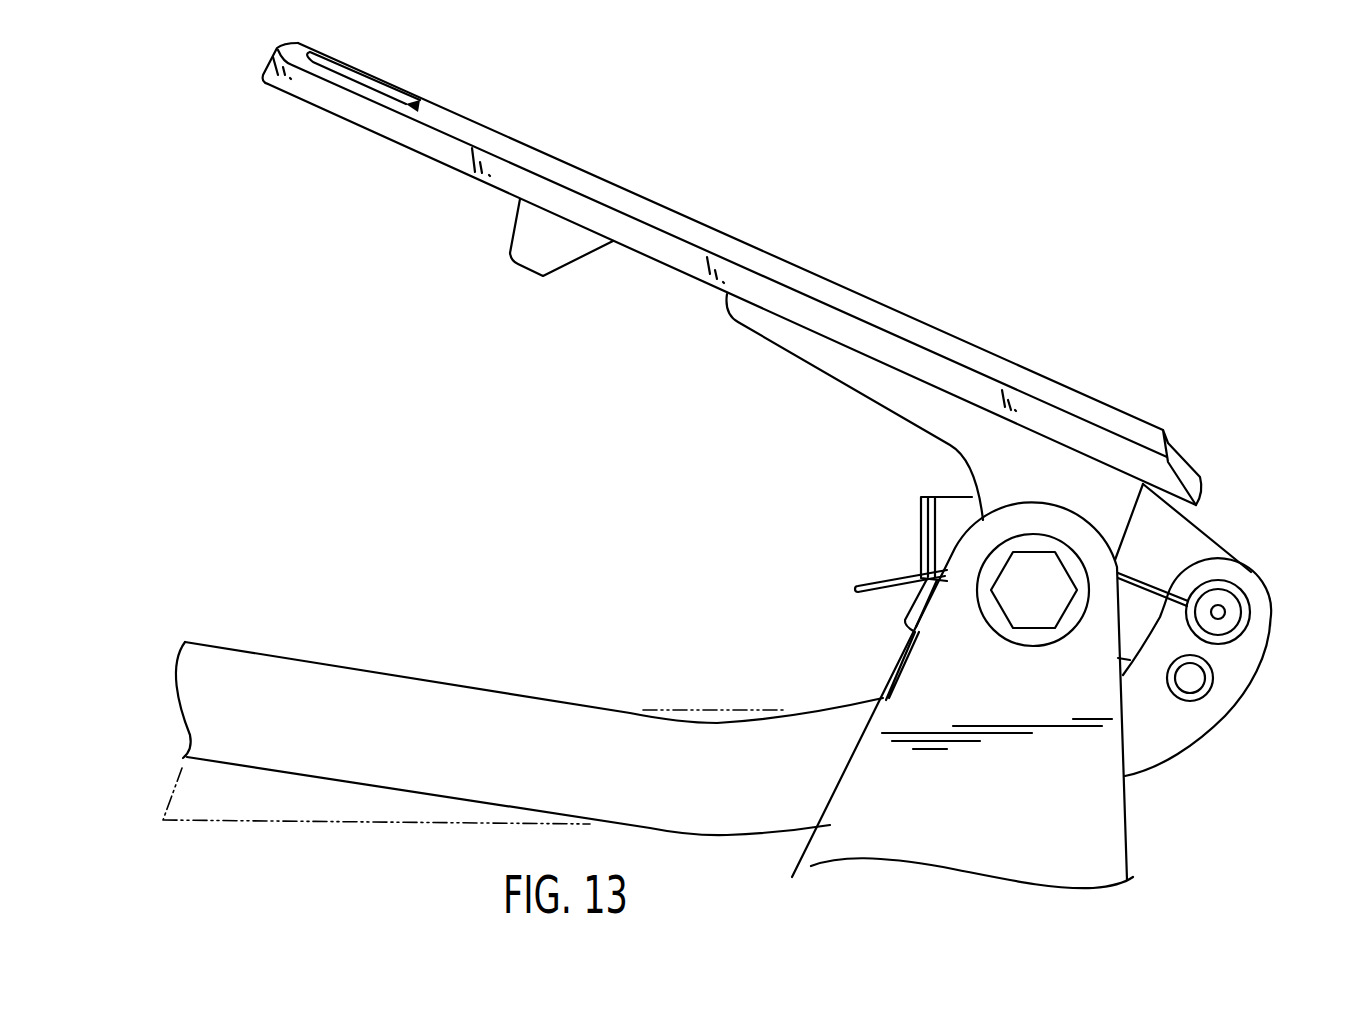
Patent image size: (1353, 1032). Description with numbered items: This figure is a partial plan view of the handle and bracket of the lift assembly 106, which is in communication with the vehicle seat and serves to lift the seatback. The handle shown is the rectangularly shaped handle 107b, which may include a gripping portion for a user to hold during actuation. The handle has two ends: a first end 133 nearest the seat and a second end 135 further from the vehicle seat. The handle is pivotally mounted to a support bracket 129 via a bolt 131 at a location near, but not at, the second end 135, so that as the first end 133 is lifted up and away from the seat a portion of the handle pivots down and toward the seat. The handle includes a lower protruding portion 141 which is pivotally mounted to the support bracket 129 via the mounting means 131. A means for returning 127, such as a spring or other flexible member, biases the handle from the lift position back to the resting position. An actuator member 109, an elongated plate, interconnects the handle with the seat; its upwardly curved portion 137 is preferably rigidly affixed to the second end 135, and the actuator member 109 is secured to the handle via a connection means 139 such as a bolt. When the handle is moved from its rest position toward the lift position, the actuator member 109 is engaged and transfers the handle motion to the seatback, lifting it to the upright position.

The lift assembly 106 is at (403, 475).
The rectangularly shaped handle 107b is at (700, 222).
The actuator member 109 is at (318, 680).
The means for returning 127 is at (872, 582).
The support bracket 129 is at (915, 670).
The bolt 131 is at (1040, 553).
The first end 133 is at (268, 84).
The second end 135 is at (1102, 402).
The upwardly curved portion 137 is at (1223, 690).
The connection means 139 is at (1243, 630).
The lower protruding portion 141 is at (1183, 533).